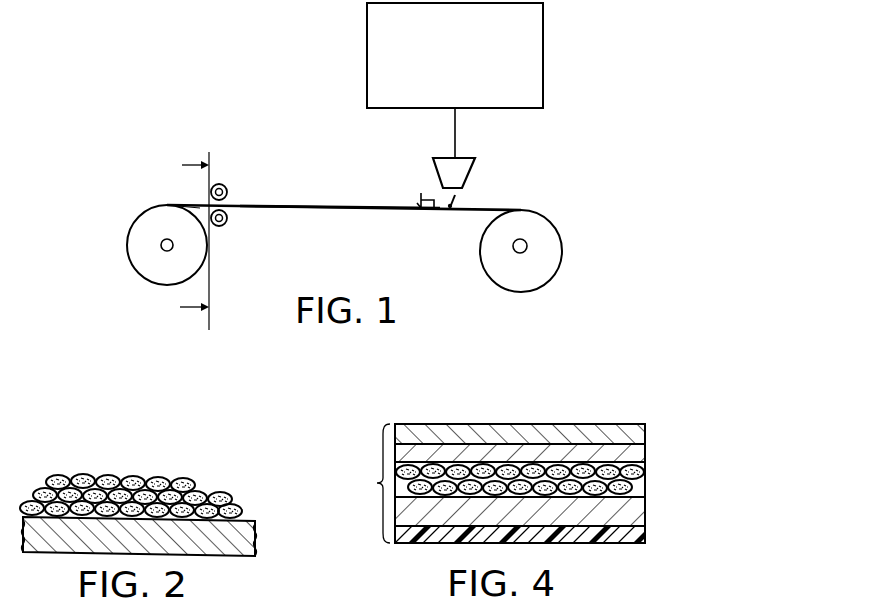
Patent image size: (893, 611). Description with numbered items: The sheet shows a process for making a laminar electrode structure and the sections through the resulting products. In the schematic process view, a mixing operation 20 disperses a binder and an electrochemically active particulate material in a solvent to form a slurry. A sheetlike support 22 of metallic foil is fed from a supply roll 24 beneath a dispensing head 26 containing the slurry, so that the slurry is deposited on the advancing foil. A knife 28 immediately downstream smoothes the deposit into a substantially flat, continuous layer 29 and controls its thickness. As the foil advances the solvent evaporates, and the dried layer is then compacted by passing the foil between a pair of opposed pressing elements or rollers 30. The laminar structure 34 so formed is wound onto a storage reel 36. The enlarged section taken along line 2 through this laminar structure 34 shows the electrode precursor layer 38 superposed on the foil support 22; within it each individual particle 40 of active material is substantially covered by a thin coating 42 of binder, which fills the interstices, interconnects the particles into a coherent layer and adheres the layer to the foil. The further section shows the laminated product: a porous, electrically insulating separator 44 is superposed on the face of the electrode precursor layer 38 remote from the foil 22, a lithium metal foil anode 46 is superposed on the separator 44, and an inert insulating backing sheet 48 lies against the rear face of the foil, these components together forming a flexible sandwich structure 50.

In FIG. 1, the section line 2— 2 is at (192, 241).
In FIG. 1, the mixing operation 20 is at (367, 62).
In FIG. 1, the sheetlike support 22 is at (470, 211).
In FIG. 2, the sheetlike support 22 is at (250, 534).
In FIG. 4, the sheetlike support 22 is at (646, 512).
In FIG. 1, the supply roll 24 is at (547, 256).
In FIG. 1, the dispensing head 26 is at (466, 160).
In FIG. 1, the knife 28 is at (422, 211).
In FIG. 1, the layer 29 is at (298, 207).
In FIG. 1, the pressing elements or rollers 30 is at (227, 186).
In FIG. 1, the laminar structure 34 is at (184, 204).
In FIG. 2, the laminar structure 34 is at (180, 468).
In FIG. 1, the storage reel 36 is at (128, 246).
In FIG. 2, the electrode precursor layer 38 is at (232, 506).
In FIG. 4, the electrode precursor layer 38 is at (646, 477).
In FIG. 2, the particle 40 is at (66, 478).
In FIG. 2, the coating of binder 42 is at (98, 472).
In FIG. 4, the separator 44 is at (646, 453).
In FIG. 4, the anode 46 is at (632, 432).
In FIG. 4, the backing sheet 48 is at (646, 538).
In FIG. 4, the sandwich structure 50 is at (370, 483).